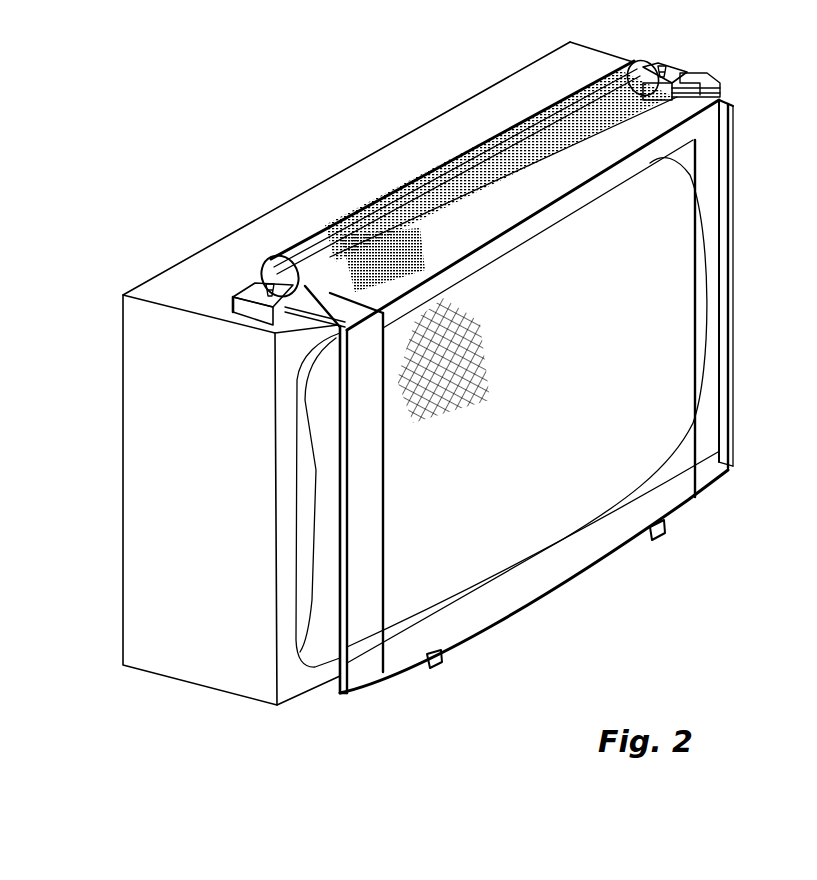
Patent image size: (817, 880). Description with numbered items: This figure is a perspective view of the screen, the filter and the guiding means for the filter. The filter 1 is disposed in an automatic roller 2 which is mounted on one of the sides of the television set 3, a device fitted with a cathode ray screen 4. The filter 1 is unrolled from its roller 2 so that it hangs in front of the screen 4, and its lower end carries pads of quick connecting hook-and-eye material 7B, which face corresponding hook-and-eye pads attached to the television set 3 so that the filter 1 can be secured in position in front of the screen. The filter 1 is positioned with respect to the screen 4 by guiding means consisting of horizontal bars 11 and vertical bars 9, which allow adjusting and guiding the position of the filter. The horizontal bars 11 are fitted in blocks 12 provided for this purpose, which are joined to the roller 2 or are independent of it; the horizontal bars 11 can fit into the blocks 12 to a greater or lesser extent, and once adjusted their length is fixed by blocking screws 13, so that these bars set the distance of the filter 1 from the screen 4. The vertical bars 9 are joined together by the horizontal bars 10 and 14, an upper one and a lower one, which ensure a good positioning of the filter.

The filter 1 is at (385, 617).
The automatic roller 2 is at (348, 232).
The television set 3 is at (185, 482).
The cathode ray screen 4 is at (328, 520).
The pads of quick connecting hook-and-eye material 7B is at (447, 658).
The vertical bars 9 is at (337, 415).
The horizontal bar 10 is at (490, 248).
The horizontal bars 11 is at (313, 310).
The blocks 12 is at (232, 300).
The blocking screws 13 is at (260, 280).
The horizontal bar 14 is at (588, 570).